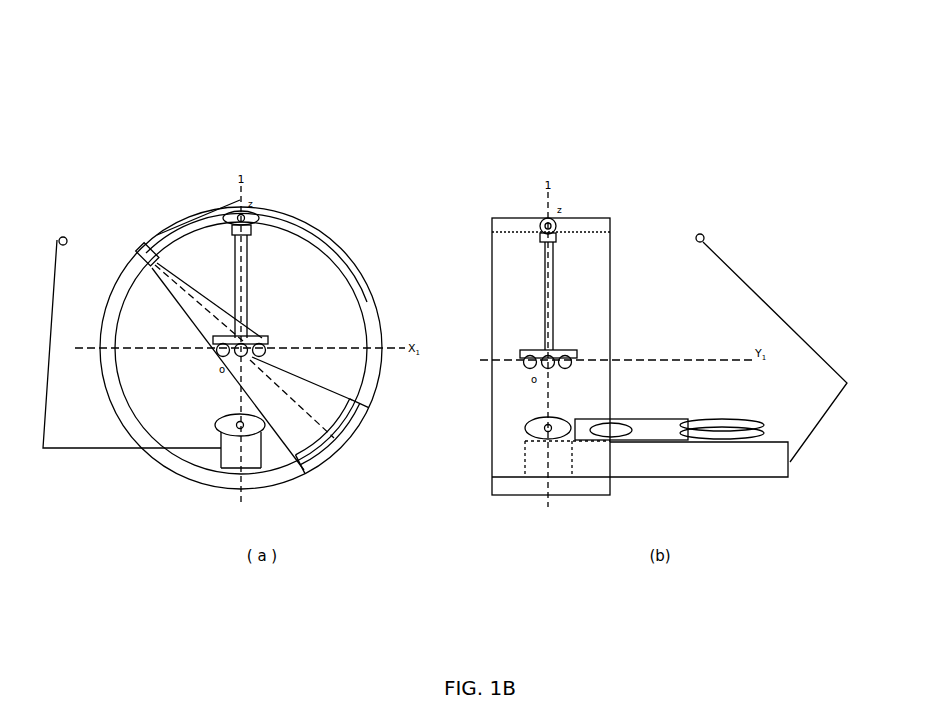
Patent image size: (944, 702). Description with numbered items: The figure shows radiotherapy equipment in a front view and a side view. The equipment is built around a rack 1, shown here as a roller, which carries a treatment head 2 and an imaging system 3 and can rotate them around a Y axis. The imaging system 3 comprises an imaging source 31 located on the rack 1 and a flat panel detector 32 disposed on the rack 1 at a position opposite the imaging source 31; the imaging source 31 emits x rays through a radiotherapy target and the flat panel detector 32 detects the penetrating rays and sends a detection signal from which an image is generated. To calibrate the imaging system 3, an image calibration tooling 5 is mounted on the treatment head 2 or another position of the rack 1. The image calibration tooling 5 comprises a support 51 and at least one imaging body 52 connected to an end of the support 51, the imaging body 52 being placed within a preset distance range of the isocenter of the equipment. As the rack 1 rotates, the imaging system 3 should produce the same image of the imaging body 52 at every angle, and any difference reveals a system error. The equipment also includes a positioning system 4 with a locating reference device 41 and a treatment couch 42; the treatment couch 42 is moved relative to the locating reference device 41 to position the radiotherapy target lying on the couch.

The rack 1 is at (292, 472).
The treatment head 2 is at (249, 254).
The imaging system 3 is at (305, 258).
The imaging source 31 is at (143, 252).
The flat panel detector 32 is at (354, 432).
The positioning system 4 is at (450, 377).
The locating reference device 41 is at (66, 245).
The treatment couch 42 is at (222, 470).
The image calibration tooling 5 is at (434, 265).
The support 51 is at (234, 286).
The imaging body 52 is at (270, 345).